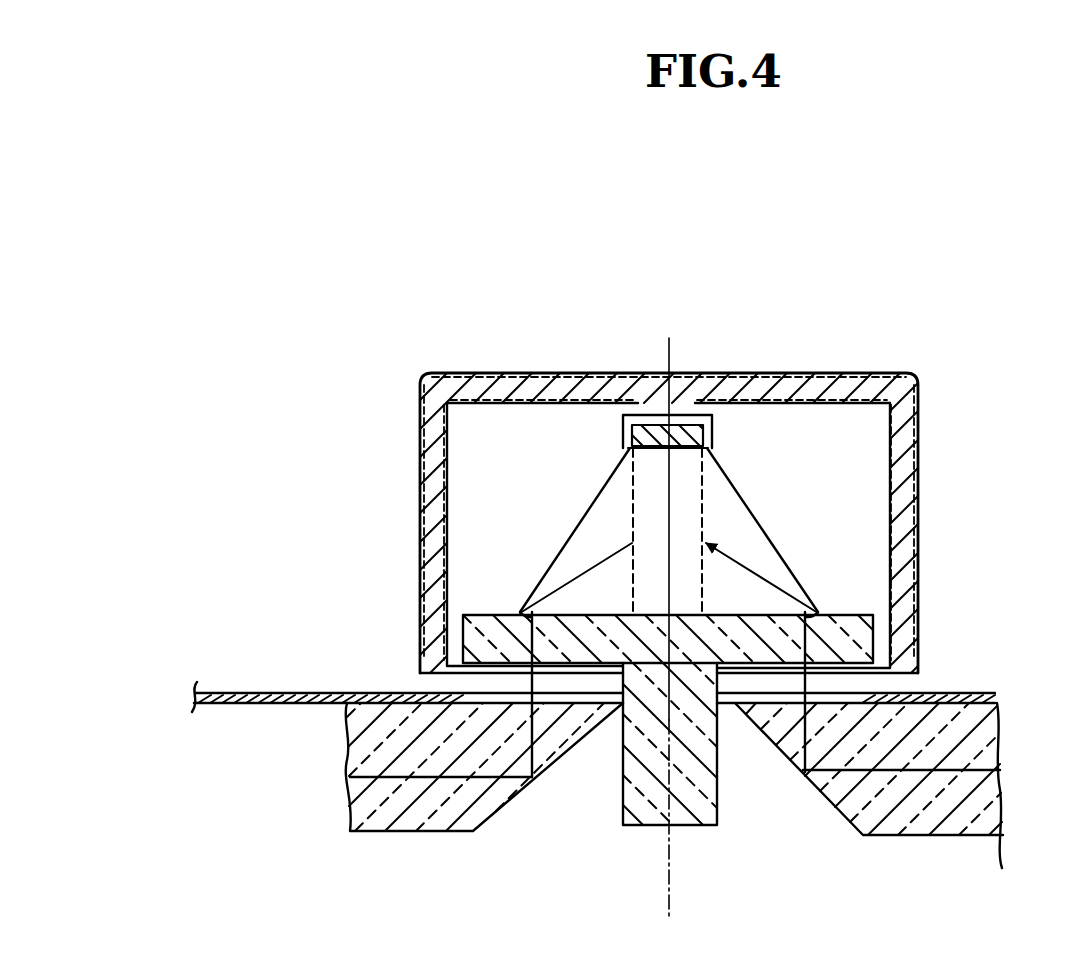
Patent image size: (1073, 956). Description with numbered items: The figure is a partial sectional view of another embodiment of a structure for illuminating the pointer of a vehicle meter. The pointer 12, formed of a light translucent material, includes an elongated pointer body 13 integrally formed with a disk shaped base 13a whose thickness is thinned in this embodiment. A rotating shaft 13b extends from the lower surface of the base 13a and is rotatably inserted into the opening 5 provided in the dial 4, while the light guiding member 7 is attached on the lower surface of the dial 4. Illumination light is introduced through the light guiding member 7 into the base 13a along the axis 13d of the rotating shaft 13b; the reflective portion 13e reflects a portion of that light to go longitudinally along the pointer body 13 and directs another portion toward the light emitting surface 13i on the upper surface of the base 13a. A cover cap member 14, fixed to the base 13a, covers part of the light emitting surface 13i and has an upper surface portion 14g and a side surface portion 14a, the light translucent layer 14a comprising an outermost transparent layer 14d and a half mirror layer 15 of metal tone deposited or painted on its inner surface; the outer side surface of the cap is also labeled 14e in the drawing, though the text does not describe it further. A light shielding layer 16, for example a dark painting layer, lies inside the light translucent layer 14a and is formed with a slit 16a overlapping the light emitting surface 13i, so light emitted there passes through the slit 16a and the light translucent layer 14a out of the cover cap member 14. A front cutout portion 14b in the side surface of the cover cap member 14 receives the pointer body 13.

The dial 4 is at (967, 686).
The opening 5 is at (858, 691).
The light guiding member 7 is at (408, 830).
The pointer 12 is at (883, 282).
The pointer body 13 is at (738, 464).
The base 13a is at (873, 617).
The rotating shaft 13b is at (718, 770).
The axis 13d is at (670, 892).
The reflective portion 13e is at (752, 507).
The light emitting surface 13i is at (685, 430).
The cover cap member 14 is at (868, 366).
The light translucent layer 14a is at (920, 440).
The front cutout portion 14b is at (652, 422).
The transparent layer 14d is at (832, 372).
The outer surface of side wall 14e is at (918, 521).
The upper surface portion 14g is at (891, 373).
The half mirror layer 15 is at (577, 378).
The light shielding layer 16 is at (570, 413).
The slit 16a is at (686, 418).